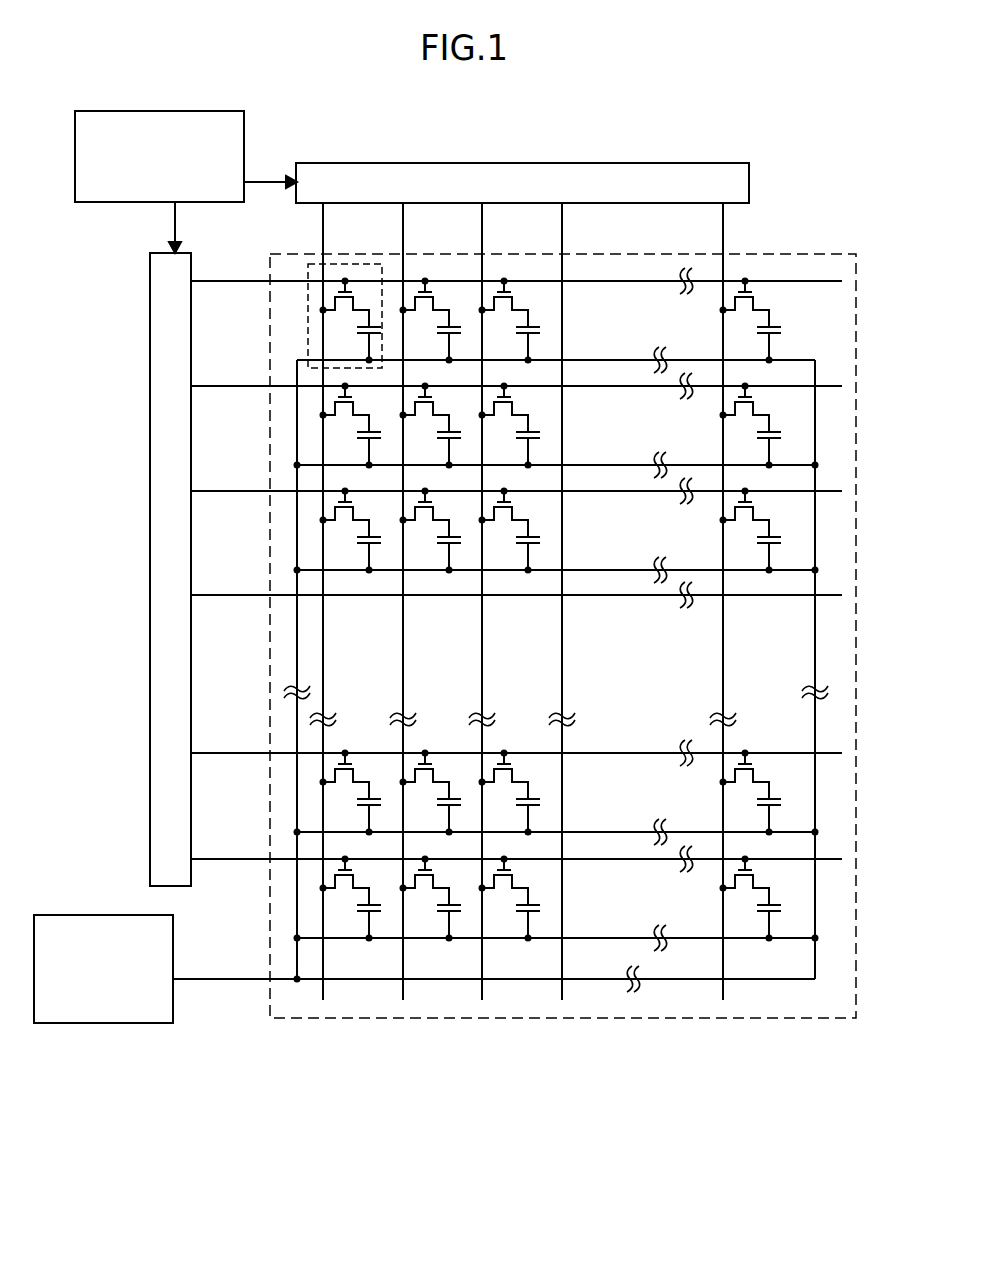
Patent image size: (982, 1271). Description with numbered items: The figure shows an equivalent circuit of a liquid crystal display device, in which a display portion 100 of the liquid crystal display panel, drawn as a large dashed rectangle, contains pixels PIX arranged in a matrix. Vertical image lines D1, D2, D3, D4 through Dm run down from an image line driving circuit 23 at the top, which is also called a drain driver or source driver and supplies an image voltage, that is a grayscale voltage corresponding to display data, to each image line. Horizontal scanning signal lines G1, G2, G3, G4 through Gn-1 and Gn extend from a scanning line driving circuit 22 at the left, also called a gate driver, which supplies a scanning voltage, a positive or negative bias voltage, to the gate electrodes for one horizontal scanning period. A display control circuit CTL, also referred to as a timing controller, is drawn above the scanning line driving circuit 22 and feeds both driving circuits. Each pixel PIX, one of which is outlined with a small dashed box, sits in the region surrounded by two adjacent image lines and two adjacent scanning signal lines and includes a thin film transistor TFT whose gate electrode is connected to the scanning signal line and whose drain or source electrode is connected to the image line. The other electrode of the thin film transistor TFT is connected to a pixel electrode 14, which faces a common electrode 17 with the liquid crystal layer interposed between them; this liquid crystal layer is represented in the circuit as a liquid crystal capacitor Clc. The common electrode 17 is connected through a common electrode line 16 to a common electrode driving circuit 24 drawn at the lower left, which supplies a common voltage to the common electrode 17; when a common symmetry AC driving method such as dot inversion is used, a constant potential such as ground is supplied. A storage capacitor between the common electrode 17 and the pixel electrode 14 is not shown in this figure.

The display control circuit CTL is at (180, 111).
The image line driving circuit 23 is at (628, 163).
The scanning line driving circuit 22 is at (150, 452).
The common electrode driving circuit 24 is at (67, 915).
The display portion 100 is at (822, 1018).
The pixel PIX is at (340, 264).
The thin film transistor TFT is at (510, 296).
The pixel electrode 14 is at (771, 312).
The liquid crystal capacitor Clc is at (782, 336).
The common electrode 17 is at (617, 358).
The common electrode line 16 is at (240, 979).
The scanning signal line G1 is at (516, 305).
The scanning signal line G2 is at (516, 410).
The scanning signal line G3 is at (516, 515).
The scanning signal line G4 is at (516, 619).
The scanning signal line Gn-1 is at (516, 776).
The scanning signal line Gn is at (516, 882).
The image line D1 is at (338, 633).
The image line D2 is at (417, 633).
The image line D3 is at (496, 633).
The image line D4 is at (576, 633).
The image line Dm is at (739, 633).